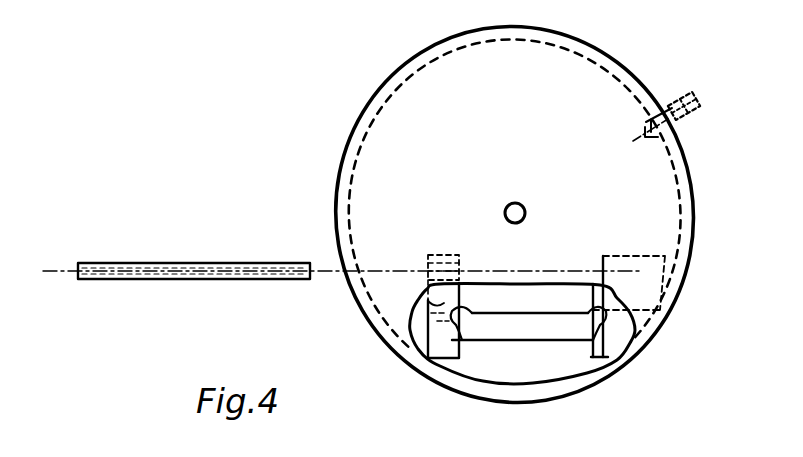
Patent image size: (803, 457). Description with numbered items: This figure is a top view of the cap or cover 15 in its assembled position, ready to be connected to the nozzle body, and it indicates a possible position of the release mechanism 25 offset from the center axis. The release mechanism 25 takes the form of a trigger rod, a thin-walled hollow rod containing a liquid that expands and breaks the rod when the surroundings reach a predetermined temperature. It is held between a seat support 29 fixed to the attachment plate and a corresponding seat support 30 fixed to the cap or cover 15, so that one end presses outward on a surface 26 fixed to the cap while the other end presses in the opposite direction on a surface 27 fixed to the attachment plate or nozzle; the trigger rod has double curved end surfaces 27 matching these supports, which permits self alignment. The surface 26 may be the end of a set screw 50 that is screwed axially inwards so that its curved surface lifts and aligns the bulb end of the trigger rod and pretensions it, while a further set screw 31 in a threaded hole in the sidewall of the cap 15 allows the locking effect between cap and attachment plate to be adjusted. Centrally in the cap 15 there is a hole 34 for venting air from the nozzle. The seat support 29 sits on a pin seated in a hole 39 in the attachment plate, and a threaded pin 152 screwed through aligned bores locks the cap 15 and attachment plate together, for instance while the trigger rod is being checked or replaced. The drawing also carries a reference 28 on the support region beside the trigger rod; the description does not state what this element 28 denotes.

The cap or cover 15 is at (623, 62).
The set screw 31 is at (701, 101).
The hole 34 is at (527, 212).
The threaded pin 152 is at (143, 262).
The hole 39 is at (428, 268).
The set screw 50 is at (603, 262).
The release mechanism 25 is at (527, 333).
The surface 27 is at (459, 283).
The left retaining wall 28 is at (431, 360).
The seat support 30 is at (645, 338).
The surface 26 is at (590, 355).
The seat support 29 is at (422, 293).